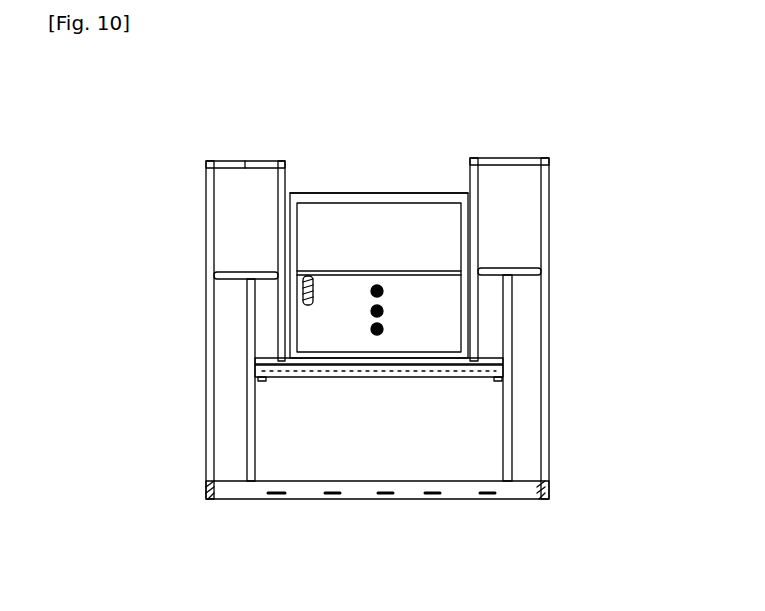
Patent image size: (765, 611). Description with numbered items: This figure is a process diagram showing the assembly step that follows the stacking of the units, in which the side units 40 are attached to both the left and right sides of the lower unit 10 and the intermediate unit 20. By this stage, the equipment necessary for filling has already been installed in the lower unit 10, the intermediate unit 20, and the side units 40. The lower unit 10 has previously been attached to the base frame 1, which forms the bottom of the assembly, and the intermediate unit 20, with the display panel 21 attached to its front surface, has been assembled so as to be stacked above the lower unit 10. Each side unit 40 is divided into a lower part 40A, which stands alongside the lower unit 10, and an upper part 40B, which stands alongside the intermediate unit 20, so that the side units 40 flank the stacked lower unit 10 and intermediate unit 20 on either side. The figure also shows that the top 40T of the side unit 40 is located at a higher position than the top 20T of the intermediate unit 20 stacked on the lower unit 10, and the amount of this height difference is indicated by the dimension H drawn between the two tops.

The base frame 1 is at (527, 494).
The lower unit 10 is at (480, 417).
The intermediate unit 20 is at (428, 317).
The top of the intermediate unit 20T is at (430, 192).
The display panel 21 is at (423, 243).
The side unit 40 is at (204, 267).
The top of the side unit 40T is at (233, 162).
The lower part of the side unit 40A is at (553, 368).
The upper part of the side unit 40B is at (552, 203).
The dimension H is at (300, 164).